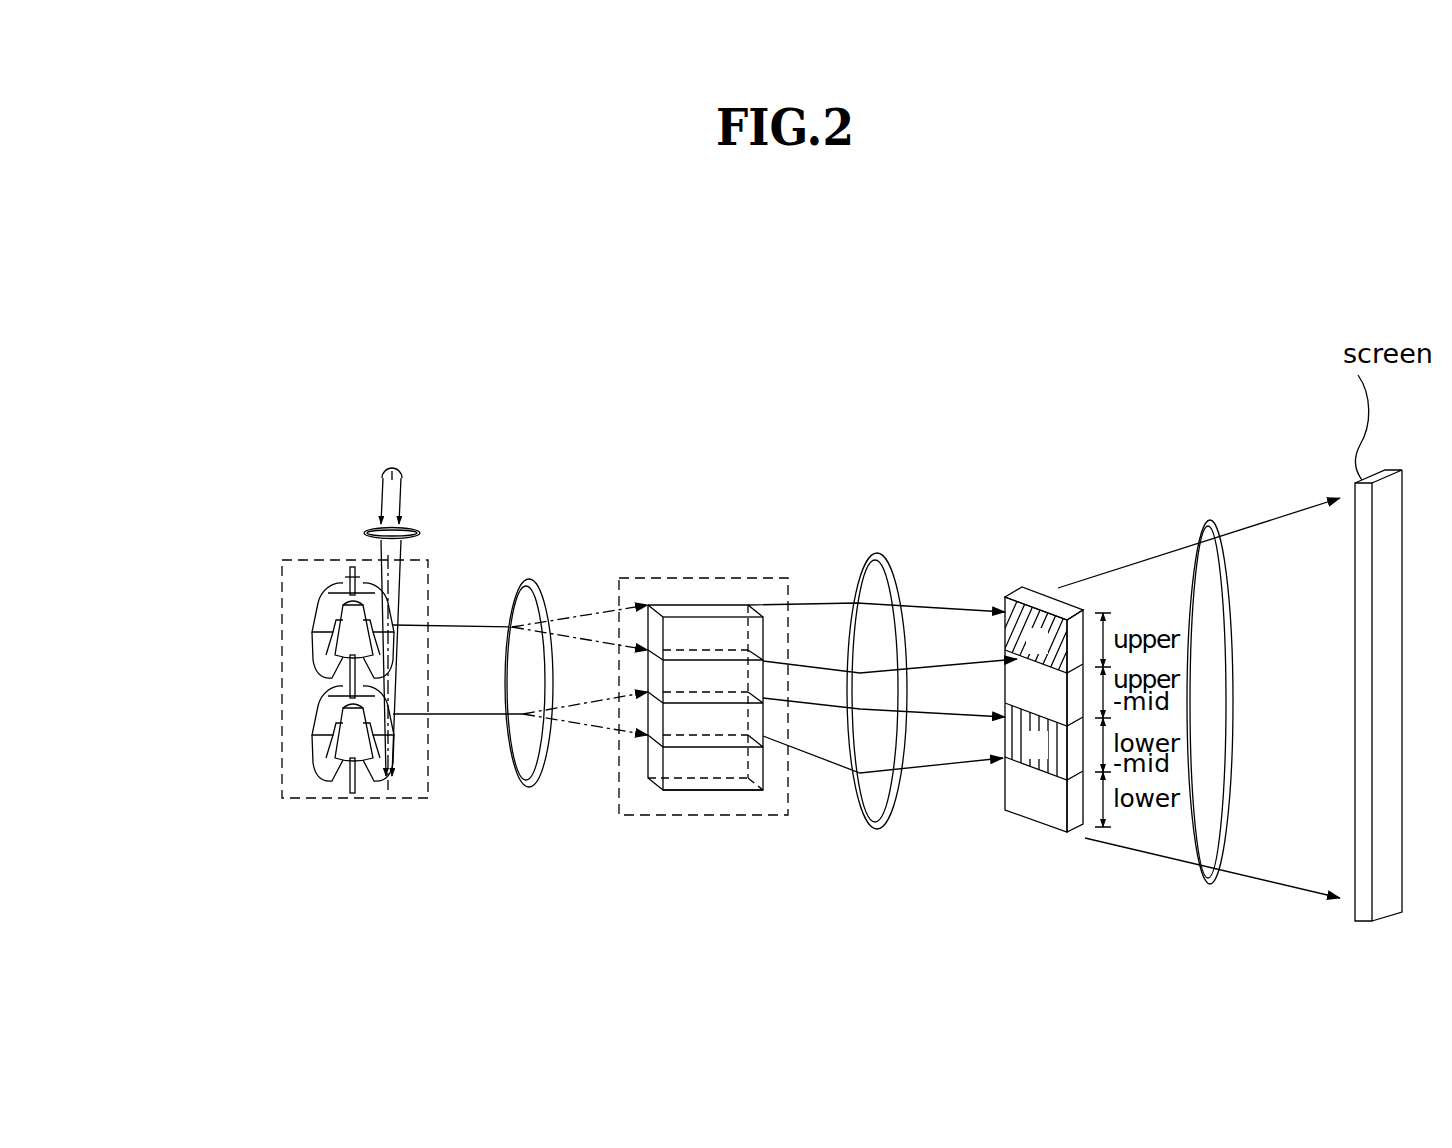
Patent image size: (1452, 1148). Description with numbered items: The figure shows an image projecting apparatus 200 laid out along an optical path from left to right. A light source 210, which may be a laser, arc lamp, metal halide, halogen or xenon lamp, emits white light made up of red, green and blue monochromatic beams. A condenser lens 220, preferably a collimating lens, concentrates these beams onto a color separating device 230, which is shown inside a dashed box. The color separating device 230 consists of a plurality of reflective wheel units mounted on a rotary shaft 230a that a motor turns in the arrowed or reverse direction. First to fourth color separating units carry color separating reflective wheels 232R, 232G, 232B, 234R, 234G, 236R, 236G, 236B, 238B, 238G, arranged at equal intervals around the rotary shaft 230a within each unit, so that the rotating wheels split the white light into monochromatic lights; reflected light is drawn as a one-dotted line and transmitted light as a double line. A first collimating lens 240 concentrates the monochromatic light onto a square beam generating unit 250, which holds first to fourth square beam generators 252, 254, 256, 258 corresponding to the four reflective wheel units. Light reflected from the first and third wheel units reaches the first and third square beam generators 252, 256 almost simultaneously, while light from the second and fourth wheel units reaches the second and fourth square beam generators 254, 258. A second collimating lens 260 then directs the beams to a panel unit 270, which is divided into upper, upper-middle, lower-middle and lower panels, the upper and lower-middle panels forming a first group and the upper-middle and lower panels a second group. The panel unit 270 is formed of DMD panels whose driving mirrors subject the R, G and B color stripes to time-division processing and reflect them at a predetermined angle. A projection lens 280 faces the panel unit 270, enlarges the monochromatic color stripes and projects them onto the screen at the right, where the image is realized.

The image projecting apparatus 200 is at (786, 377).
The light source 210 is at (400, 471).
The condenser lens 220 is at (418, 532).
The color separating device 230 is at (316, 562).
The rotary shaft 230a is at (318, 565).
The color separating reflective wheel 232B is at (343, 586).
The color separating reflective wheel 232R is at (372, 584).
The color separating reflective wheel 232G is at (383, 603).
The color separating reflective wheel 234G is at (318, 655).
The color separating reflective wheel 234R is at (388, 637).
The color separating reflective wheel 236R is at (318, 713).
The color separating reflective wheel 236G is at (383, 688).
The color separating reflective wheel 236B is at (385, 733).
The color separating reflective wheel 238B is at (316, 761).
The color separating reflective wheel 238G is at (390, 763).
The first collimating lens 240 is at (528, 580).
The square beam generating unit 250 is at (730, 655).
The first square beam generator 252 is at (766, 638).
The second square beam generator 254 is at (766, 679).
The third square beam generator 256 is at (766, 724).
The fourth square beam generator 258 is at (766, 778).
The second collimating lens 260 is at (870, 553).
The panel unit 270 is at (1020, 590).
The projection lens 280 is at (1210, 520).